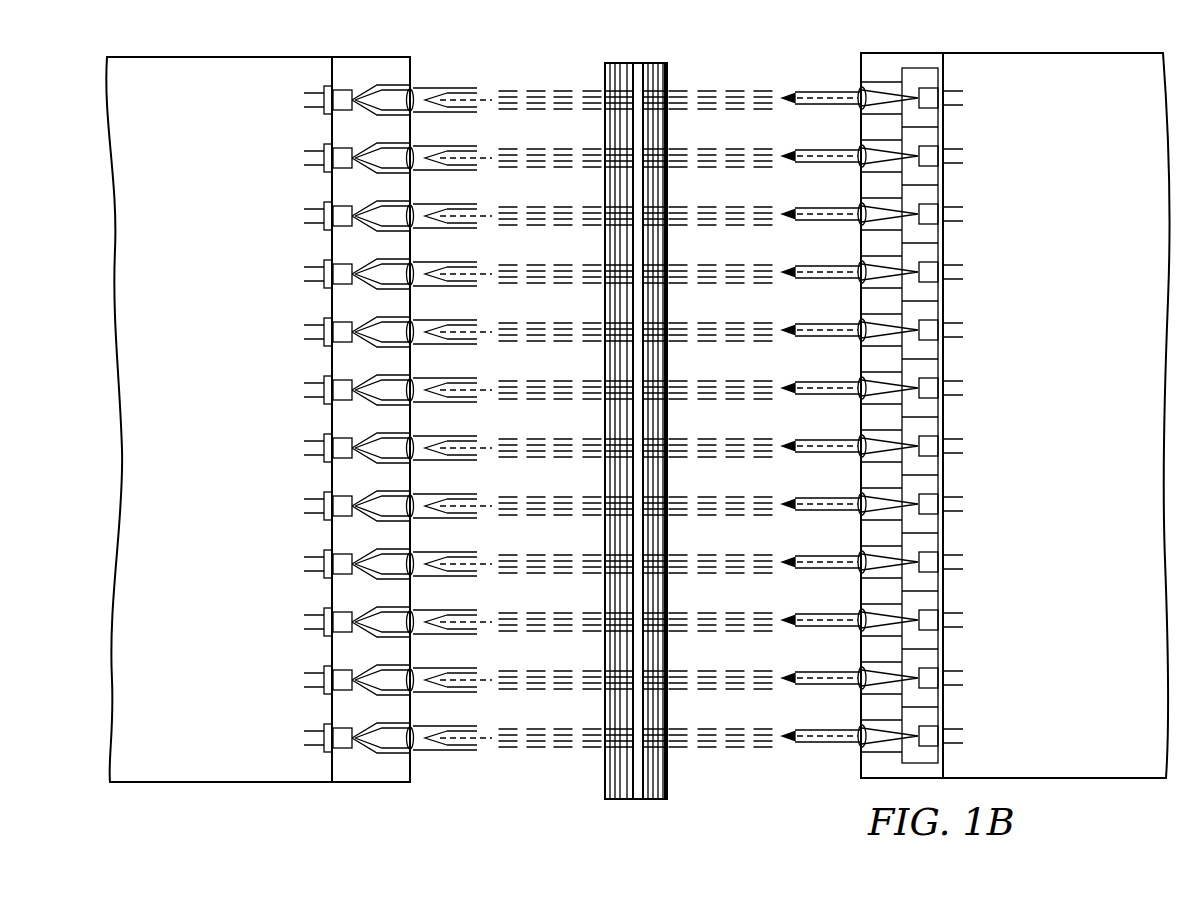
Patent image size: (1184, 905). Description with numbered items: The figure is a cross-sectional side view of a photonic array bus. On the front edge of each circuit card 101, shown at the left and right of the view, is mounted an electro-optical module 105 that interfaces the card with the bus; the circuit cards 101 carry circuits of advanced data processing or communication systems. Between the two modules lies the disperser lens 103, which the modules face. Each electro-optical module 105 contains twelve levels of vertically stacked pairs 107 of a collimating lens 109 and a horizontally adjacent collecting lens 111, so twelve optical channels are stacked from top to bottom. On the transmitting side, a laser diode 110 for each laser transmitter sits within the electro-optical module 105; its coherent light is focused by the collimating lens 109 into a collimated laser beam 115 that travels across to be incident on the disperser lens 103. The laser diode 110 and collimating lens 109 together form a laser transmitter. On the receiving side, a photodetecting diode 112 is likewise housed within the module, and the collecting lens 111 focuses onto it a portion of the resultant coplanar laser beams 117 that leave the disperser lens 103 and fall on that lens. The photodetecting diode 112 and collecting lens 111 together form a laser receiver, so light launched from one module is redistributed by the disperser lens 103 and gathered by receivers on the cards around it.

The circuit card 101 is at (176, 753).
The disperser lens 103 is at (645, 808).
The electro-optical module 105 is at (350, 54).
The vertically stacked pair of collimating lens and collecting lens 107 is at (270, 444).
The collimating lens 109 is at (854, 88).
The laser diode 110 is at (943, 111).
The collecting lens 111 is at (420, 112).
The photodetecting diode 112 is at (325, 115).
The collimated laser beam 115 is at (713, 80).
The coplanar laser beams 117 is at (558, 80).